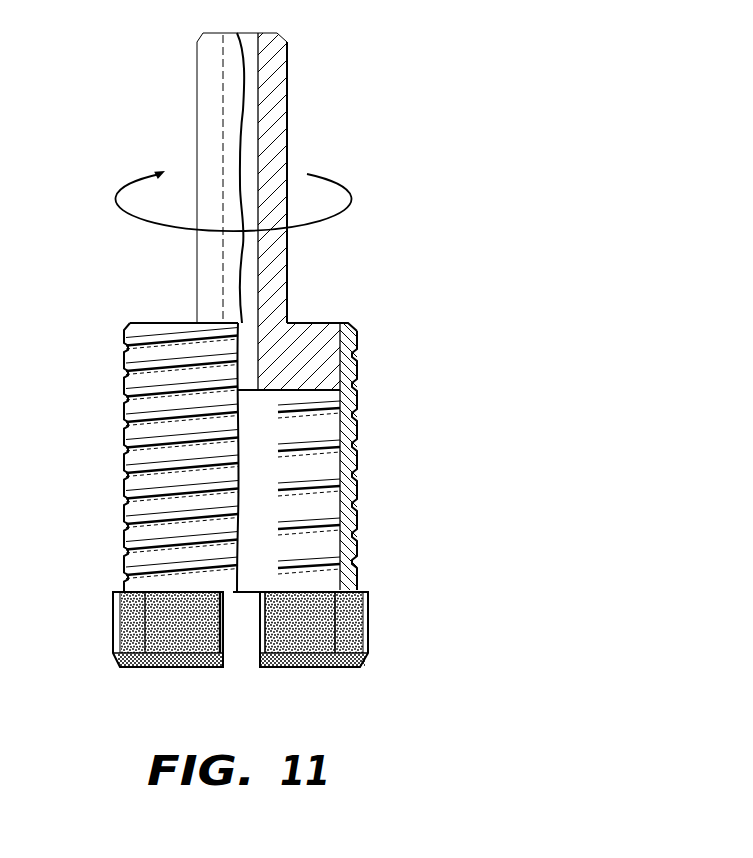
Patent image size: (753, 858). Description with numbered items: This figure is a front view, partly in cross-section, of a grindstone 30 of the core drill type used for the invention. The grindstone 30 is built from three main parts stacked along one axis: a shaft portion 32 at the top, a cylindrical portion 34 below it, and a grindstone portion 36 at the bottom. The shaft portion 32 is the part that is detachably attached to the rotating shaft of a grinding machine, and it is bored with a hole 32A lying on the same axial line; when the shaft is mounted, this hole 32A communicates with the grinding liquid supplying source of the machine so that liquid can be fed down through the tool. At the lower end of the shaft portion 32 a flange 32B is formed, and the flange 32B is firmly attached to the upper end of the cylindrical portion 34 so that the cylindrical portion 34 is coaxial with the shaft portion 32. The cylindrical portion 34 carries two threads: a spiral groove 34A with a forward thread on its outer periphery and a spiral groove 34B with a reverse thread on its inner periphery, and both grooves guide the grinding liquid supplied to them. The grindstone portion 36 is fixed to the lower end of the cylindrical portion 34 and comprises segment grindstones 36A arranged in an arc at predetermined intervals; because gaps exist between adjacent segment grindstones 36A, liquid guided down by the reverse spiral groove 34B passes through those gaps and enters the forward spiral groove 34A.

The grindstone 30 is at (369, 300).
The shaft portion 32 is at (296, 248).
The hole 32A is at (252, 70).
The flange 32B is at (317, 332).
The cylindrical portion 34 is at (365, 350).
The spiral groove having a forward thread 34A is at (130, 377).
The spiral groove having a reverse thread 34B is at (320, 492).
The grindstone portion 36 is at (251, 642).
The segment grindstone 36A is at (115, 637).